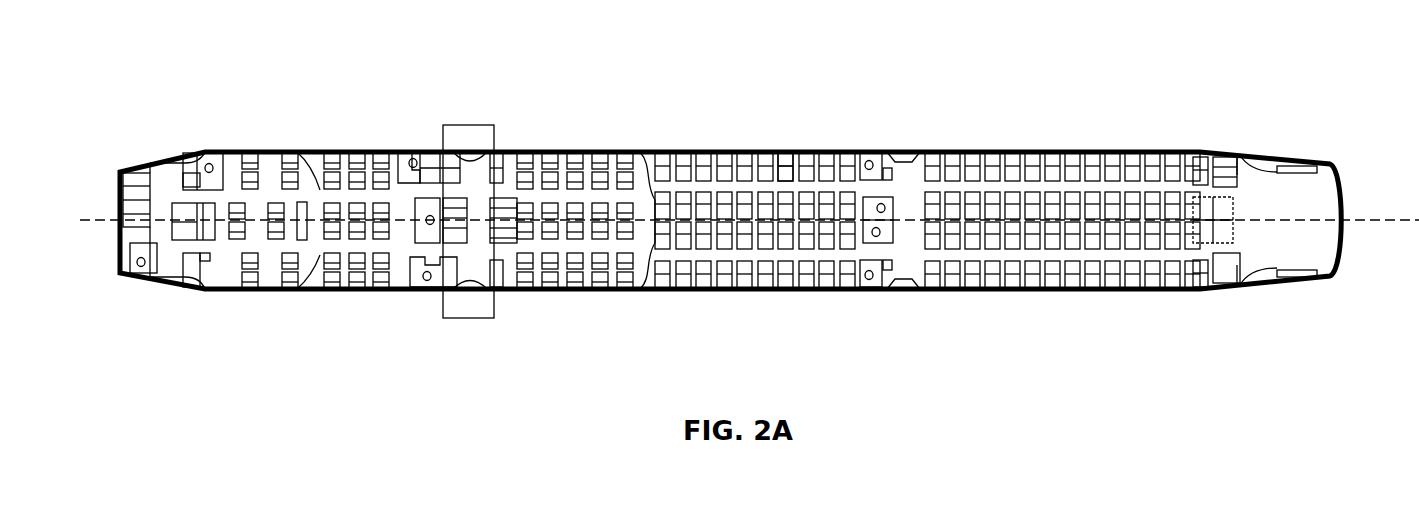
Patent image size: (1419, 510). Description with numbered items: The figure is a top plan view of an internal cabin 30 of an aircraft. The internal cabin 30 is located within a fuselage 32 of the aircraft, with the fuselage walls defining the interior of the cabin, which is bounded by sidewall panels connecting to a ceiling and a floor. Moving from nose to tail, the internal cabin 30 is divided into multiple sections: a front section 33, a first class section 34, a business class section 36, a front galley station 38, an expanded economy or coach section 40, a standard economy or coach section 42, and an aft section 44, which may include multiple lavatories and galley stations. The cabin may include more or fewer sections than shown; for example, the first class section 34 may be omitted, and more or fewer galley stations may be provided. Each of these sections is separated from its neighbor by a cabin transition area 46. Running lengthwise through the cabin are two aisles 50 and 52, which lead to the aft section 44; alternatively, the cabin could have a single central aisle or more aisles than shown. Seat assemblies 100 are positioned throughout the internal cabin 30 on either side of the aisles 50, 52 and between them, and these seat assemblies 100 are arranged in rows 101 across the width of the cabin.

The internal cabin 30 is at (258, 52).
The fuselage 32 is at (590, 100).
The front section 33 is at (175, 312).
The first class section 34 is at (273, 296).
The business class section 36 is at (347, 150).
The front galley station 38 is at (467, 312).
The expanded economy or coach section 40 is at (570, 296).
The standard economy or coach section 42 is at (699, 150).
The aft section 44 is at (1265, 170).
The cabin transition area 46 is at (193, 150).
The aisle 50 is at (1060, 190).
The aisle 52 is at (1077, 257).
The seat assembly 100 is at (823, 155).
The row 101 is at (816, 138).